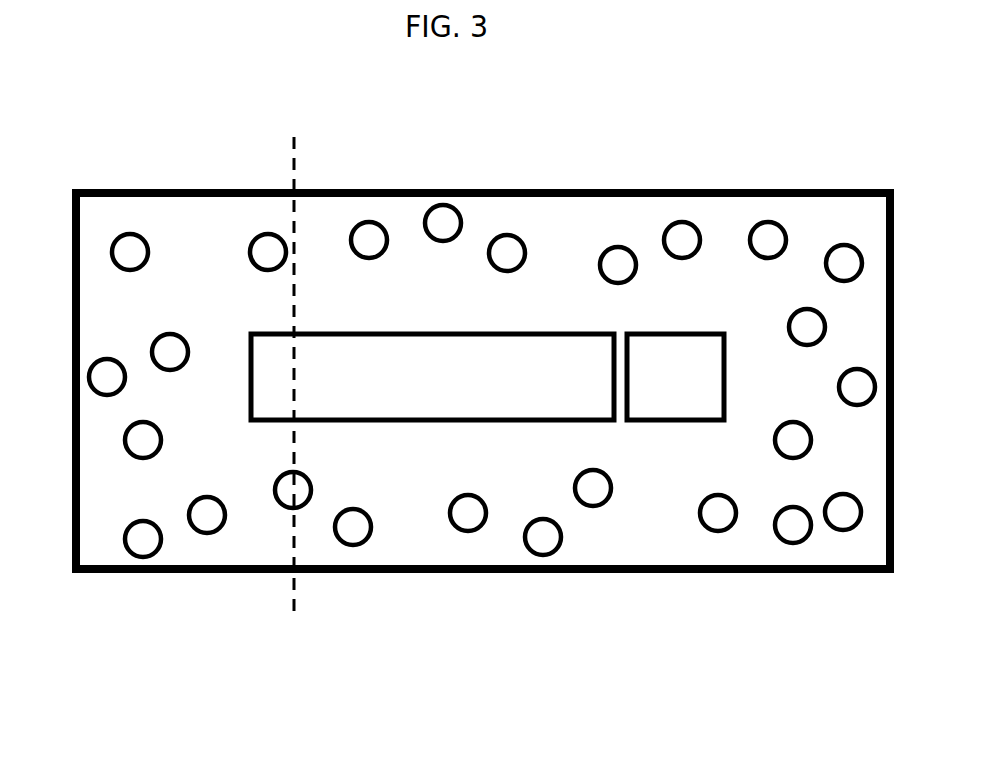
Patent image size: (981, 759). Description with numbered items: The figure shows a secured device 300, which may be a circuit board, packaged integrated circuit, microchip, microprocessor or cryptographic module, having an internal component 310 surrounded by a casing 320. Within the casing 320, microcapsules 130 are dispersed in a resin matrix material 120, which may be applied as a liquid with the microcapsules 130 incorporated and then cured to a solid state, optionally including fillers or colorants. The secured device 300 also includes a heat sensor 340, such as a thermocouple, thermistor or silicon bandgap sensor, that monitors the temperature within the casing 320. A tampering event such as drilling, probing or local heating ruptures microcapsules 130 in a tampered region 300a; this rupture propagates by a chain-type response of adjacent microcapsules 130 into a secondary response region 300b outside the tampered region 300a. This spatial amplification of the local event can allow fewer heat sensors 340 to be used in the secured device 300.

The matrix material 120 is at (403, 530).
The microcapsules 130 is at (206, 518).
The secured device 300 is at (877, 115).
The tampered region 300a is at (174, 356).
The secondary response region 300b is at (487, 260).
The internal component 310 is at (432, 377).
The casing 320 is at (475, 573).
The heat sensor 340 is at (675, 377).